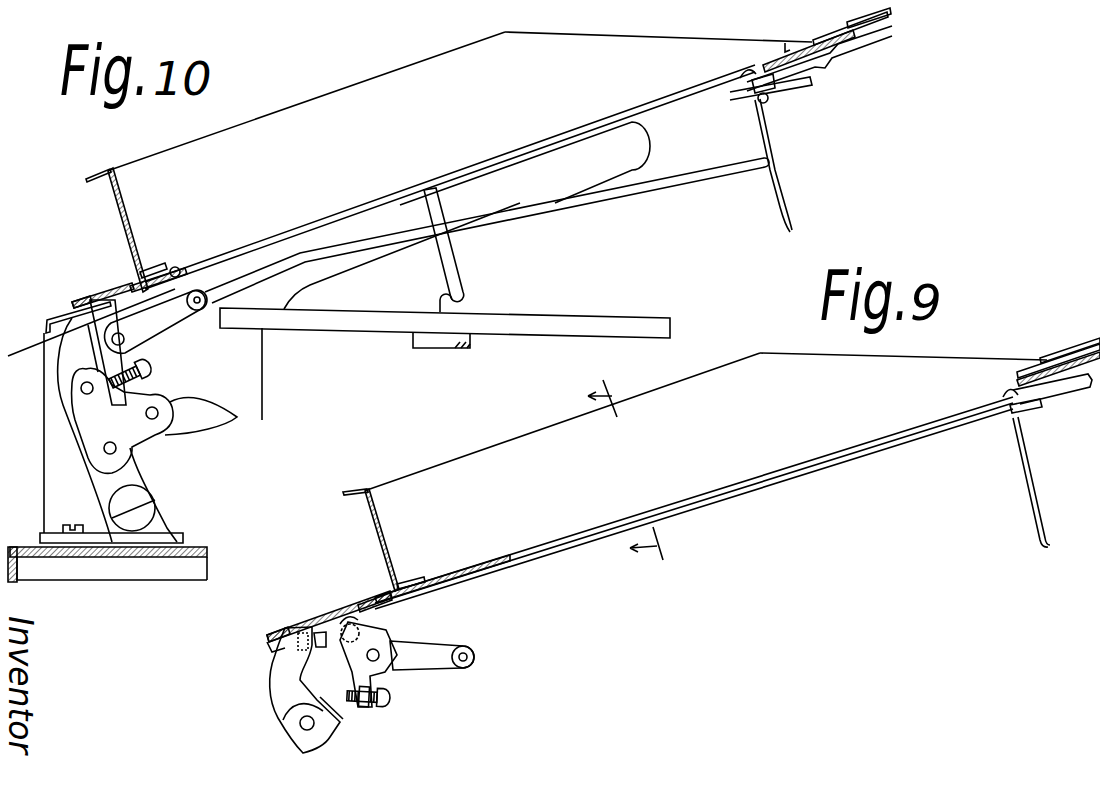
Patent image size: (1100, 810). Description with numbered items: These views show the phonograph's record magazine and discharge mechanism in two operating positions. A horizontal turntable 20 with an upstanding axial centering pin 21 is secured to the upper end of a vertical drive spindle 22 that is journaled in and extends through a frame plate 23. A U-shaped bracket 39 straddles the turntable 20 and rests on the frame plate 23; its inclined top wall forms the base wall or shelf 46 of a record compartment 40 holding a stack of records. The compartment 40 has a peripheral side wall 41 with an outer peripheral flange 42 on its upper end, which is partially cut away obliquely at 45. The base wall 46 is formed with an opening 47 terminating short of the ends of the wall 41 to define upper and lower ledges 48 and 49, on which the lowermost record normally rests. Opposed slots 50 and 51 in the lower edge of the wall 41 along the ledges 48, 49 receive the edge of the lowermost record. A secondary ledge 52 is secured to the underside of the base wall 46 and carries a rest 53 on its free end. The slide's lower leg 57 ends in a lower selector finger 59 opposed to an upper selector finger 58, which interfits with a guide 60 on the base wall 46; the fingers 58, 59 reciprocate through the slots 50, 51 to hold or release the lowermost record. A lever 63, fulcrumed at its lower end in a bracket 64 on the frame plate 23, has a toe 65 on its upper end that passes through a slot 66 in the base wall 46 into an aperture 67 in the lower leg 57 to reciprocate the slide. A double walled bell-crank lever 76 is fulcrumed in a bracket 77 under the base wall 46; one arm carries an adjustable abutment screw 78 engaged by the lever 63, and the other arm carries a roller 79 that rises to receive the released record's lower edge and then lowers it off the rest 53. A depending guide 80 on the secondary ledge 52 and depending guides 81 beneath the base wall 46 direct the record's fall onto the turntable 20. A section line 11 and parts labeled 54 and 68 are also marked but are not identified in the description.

In FIG. 9, the section line 11 is at (616, 392).
In FIG. 10, the turntable 20 is at (550, 318).
In FIG. 10, the centering pin 21 is at (460, 305).
In FIG. 10, the drive spindle 22 is at (467, 346).
In FIG. 10, the frame plate 23 is at (108, 578).
In FIG. 10, the bracket 39 is at (255, 369).
In FIG. 10, the record compartment 40 is at (286, 135).
In FIG. 9, the record compartment 40 is at (563, 421).
In FIG. 10, the peripheral side wall 41 is at (112, 209).
In FIG. 9, the peripheral side wall 41 is at (376, 534).
In FIG. 10, the outer peripheral flange 42 is at (96, 170).
In FIG. 9, the outer peripheral flange 42 is at (352, 498).
In FIG. 10, the oblique cut-away 45 is at (606, 34).
In FIG. 9, the oblique cut-away 45 is at (956, 354).
In FIG. 10, the base wall 46 is at (52, 320).
In FIG. 9, the base wall 46 is at (322, 640).
In FIG. 10, the opening 47 is at (257, 246).
In FIG. 9, the opening 47 is at (437, 588).
In FIG. 10, the upper ledge 48 is at (780, 50).
In FIG. 9, the upper ledge 48 is at (1045, 393).
In FIG. 10, the lower ledge 49 is at (164, 268).
In FIG. 9, the lower ledge 49 is at (430, 590).
In FIG. 10, the slot 50 is at (822, 40).
In FIG. 10, the slot 51 is at (143, 268).
In FIG. 9, the slot 51 is at (402, 586).
In FIG. 10, the secondary ledge 52 is at (810, 80).
In FIG. 9, the secondary ledge 52 is at (1050, 412).
In FIG. 10, the rest 53 is at (755, 96).
In FIG. 9, the rest 53 is at (1013, 414).
In FIG. 10, the hinge knuckle 54 is at (747, 70).
In FIG. 9, the hinge knuckle 54 is at (1002, 397).
In FIG. 10, the lower leg 57 is at (78, 300).
In FIG. 9, the lower leg 57 is at (275, 635).
In FIG. 10, the upper selector finger 58 is at (868, 36).
In FIG. 9, the upper selector finger 58 is at (1025, 373).
In FIG. 10, the lower selector finger 59 is at (172, 268).
In FIG. 9, the lower selector finger 59 is at (370, 603).
In FIG. 10, the guide 60 is at (889, 11).
In FIG. 9, the guide 60 is at (1094, 346).
In FIG. 10, the lever 63 is at (133, 473).
In FIG. 9, the lever 63 is at (303, 740).
In FIG. 10, the bracket 64 is at (163, 527).
In FIG. 10, the toe 65 is at (97, 292).
In FIG. 9, the toe 65 is at (295, 625).
In FIG. 9, the slot 66 is at (357, 618).
In FIG. 9, the aperture 67 is at (282, 636).
In FIG. 10, the cam plate 68 is at (200, 408).
In FIG. 10, the bell-crank lever 76 is at (160, 323).
In FIG. 9, the bell-crank lever 76 is at (402, 642).
In FIG. 10, the bracket 77 is at (36, 353).
In FIG. 9, the bracket 77 is at (358, 657).
In FIG. 10, the abutment screw 78 is at (158, 363).
In FIG. 9, the abutment screw 78 is at (396, 695).
In FIG. 10, the roller 79 is at (212, 297).
In FIG. 9, the roller 79 is at (474, 652).
In FIG. 10, the depending guide 80 is at (782, 163).
In FIG. 9, the depending guide 80 is at (1030, 452).
In FIG. 10, the depending guides 81 is at (456, 268).